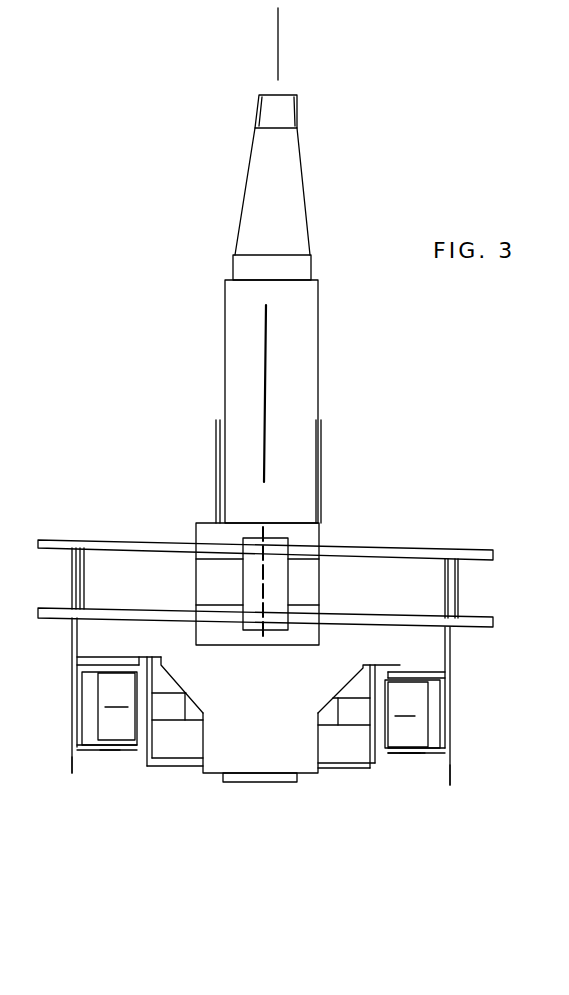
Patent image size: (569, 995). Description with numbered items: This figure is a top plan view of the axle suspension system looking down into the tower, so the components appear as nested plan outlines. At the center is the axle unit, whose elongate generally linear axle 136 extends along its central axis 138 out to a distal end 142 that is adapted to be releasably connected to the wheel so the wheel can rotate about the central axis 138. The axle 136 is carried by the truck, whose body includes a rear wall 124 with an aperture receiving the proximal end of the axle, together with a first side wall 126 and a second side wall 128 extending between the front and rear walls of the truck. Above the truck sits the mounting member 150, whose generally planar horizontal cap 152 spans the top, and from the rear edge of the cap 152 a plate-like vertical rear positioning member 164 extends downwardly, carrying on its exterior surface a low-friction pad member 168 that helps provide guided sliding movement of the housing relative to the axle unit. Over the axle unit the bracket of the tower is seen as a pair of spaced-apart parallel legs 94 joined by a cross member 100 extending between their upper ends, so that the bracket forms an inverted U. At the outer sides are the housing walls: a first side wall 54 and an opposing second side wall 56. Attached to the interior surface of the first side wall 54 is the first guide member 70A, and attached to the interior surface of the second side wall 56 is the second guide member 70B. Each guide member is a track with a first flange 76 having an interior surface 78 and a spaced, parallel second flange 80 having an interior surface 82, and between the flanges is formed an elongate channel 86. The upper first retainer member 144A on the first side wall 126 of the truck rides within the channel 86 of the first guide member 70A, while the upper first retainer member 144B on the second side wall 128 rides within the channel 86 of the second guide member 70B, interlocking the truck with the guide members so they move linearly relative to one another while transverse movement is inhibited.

The central axis 138 is at (281, 43).
The distal end 142 is at (298, 107).
The axle 136 is at (318, 353).
The cross member 100 is at (385, 548).
The cap 152 is at (428, 590).
The legs 94 is at (59, 542).
The mounting member 150 is at (420, 644).
The first flange 76 is at (113, 665).
The channel 86 is at (88, 692).
The upper first retainer member 144B is at (105, 723).
The second side wall 56 is at (72, 757).
The second guide member 70B is at (95, 752).
The second flange 80 is at (108, 752).
The second side wall 128 is at (147, 748).
The rear wall 124 is at (177, 768).
The first side wall 126 is at (380, 760).
The rear positioning member 164 is at (310, 777).
The low-friction pad member 168 is at (268, 783).
The interior surface 78 is at (440, 687).
The upper first retainer member 144A is at (408, 733).
The interior surface 82 is at (437, 747).
The first side wall 54 is at (452, 773).
The first guide member 70A is at (398, 762).